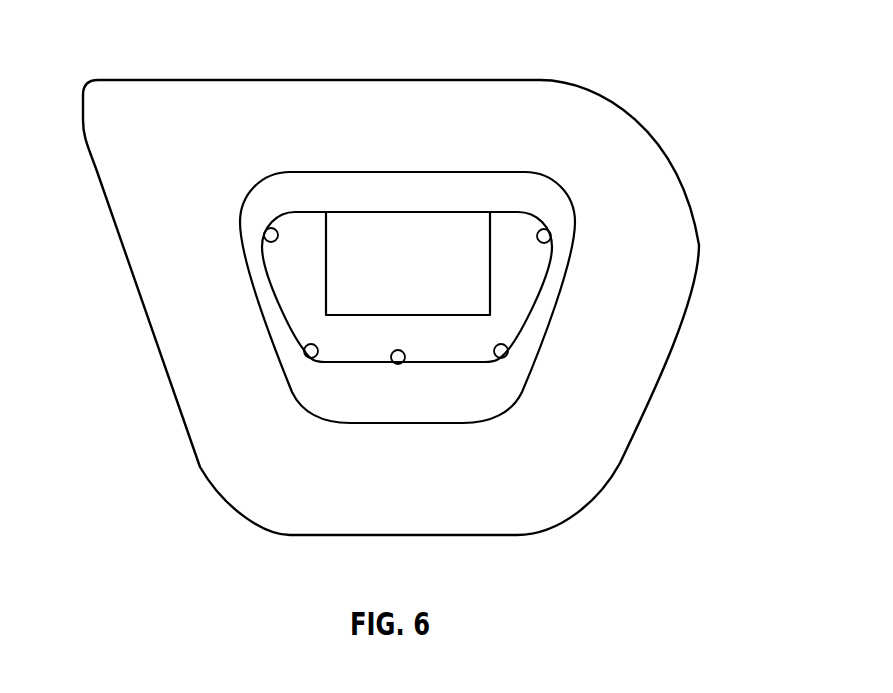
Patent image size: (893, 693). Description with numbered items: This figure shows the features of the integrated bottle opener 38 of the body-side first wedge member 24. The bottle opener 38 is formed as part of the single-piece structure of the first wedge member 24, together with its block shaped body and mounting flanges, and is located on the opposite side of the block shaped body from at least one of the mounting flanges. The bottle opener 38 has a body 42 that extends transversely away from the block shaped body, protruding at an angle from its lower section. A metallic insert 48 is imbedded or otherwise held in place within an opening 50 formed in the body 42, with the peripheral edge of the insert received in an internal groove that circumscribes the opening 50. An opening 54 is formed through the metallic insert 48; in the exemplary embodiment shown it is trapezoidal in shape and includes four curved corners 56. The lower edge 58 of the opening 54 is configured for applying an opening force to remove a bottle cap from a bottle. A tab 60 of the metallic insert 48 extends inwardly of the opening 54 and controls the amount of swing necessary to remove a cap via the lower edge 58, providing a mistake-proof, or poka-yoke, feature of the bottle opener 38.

The first wedge member 24 is at (415, 267).
The integrated bottle opener 38 is at (415, 307).
The body 42 is at (658, 337).
The metallic insert 48 is at (451, 343).
The opening 50 is at (557, 183).
The opening 54 is at (518, 280).
The curved corners 56 is at (266, 238).
The lower edge 58 is at (398, 364).
The tab 60 is at (397, 222).